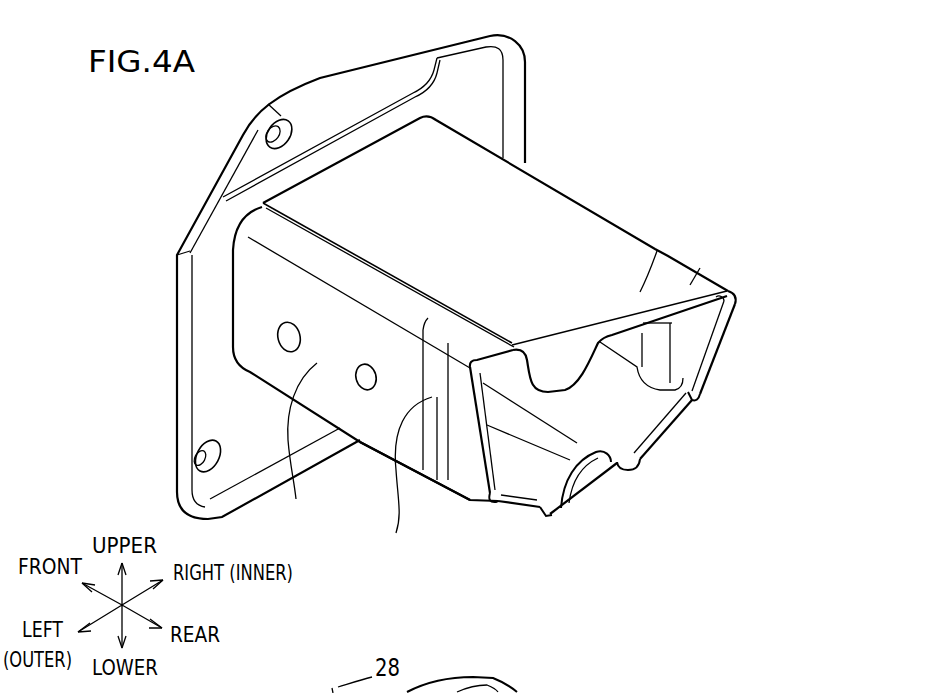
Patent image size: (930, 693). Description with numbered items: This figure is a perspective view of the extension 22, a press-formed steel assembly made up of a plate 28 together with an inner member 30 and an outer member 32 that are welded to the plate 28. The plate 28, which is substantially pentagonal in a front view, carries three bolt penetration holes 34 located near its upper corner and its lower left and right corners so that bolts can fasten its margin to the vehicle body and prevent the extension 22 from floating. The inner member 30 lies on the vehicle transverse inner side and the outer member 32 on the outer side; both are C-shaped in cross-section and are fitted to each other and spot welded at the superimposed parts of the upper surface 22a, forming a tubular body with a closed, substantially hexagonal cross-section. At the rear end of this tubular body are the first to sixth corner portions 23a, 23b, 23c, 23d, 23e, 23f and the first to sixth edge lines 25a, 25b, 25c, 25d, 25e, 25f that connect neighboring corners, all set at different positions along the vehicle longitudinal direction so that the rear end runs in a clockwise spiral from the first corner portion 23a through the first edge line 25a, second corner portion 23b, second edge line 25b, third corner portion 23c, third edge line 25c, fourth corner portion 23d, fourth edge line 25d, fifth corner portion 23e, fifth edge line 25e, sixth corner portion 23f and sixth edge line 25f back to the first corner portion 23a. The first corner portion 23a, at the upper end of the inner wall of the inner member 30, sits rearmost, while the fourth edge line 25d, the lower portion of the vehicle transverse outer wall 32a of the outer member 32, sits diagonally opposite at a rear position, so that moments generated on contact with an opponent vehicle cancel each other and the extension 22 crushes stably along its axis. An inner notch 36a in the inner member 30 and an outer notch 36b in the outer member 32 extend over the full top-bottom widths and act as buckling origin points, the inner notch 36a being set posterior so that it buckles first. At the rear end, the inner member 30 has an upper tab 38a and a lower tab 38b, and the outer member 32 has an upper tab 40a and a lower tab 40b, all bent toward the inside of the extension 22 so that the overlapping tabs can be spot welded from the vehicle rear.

The extension 22 is at (641, 103).
The upper surface 22a is at (540, 230).
The first corner portion 23a is at (731, 301).
The second corner portion 23b is at (700, 397).
The third corner portion 23c is at (637, 477).
The fourth corner portion 23d is at (547, 522).
The fifth corner portion 23e is at (485, 507).
The sixth corner portion 23f is at (487, 470).
The first edge line 25a is at (716, 348).
The second edge line 25b is at (667, 433).
The third edge line 25c is at (590, 503).
The fourth edge line 25d is at (521, 508).
The fifth edge line 25e is at (479, 490).
The sixth edge line 25f is at (670, 300).
The plate 28 is at (331, 63).
The inner member 30 is at (545, 171).
The outer member 32 is at (369, 452).
The vehicle transverse outer wall 32a is at (292, 446).
The bolt penetration holes 34 is at (262, 146).
The inner notch 36a is at (660, 249).
The outer notch 36b is at (404, 477).
The upper tab 38a is at (574, 371).
The lower tab 38b is at (600, 472).
The upper tab 40a is at (538, 368).
The lower tab 40b is at (577, 515).